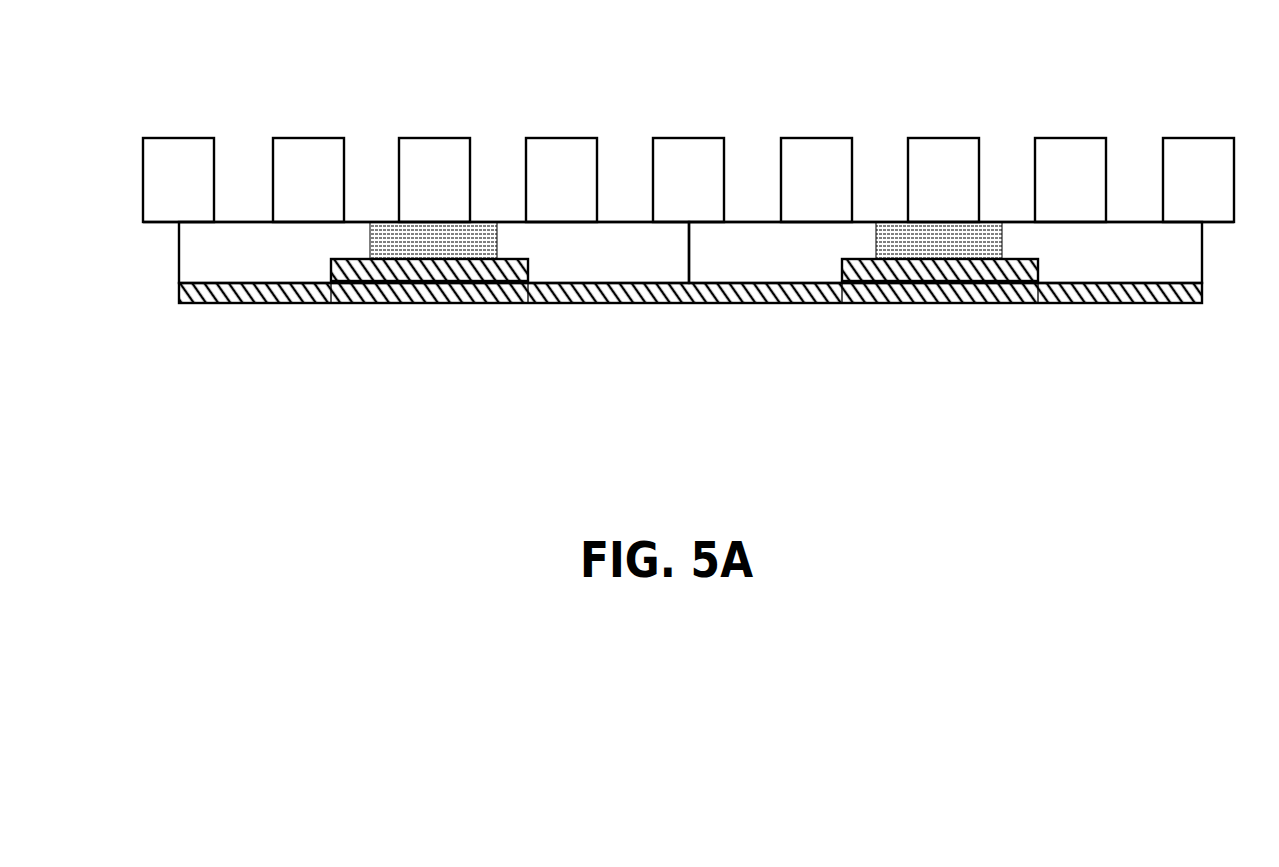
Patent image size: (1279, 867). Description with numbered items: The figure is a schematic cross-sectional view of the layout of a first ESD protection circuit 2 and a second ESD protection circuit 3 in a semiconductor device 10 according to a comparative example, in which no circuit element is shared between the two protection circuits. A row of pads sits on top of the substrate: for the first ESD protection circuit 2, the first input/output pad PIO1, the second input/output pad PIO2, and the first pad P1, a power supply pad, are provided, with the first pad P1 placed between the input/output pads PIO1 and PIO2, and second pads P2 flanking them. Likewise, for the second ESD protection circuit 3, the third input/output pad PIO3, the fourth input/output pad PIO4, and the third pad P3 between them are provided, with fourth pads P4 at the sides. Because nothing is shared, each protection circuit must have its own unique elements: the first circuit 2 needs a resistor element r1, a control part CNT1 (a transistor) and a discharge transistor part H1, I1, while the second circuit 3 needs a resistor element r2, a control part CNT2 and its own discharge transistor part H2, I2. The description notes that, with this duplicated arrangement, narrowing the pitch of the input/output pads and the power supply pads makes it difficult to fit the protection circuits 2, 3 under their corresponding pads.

The semiconductor device 10 is at (150, 105).
The first ESD protection circuit 2 is at (430, 326).
The second ESD protection circuit 3 is at (940, 326).
The first pad P1 is at (434, 138).
The second pad P2 is at (179, 138).
The third pad P3 is at (943, 138).
The fourth pad P4 is at (1198, 138).
The first input/output pad PIO1 is at (309, 138).
The second input/output pad PIO2 is at (562, 138).
The third input/output pad PIO3 is at (816, 138).
The fourth input/output pad PIO4 is at (1070, 138).
The control part CNT1 is at (331, 268).
The control part CNT2 is at (842, 268).
The resistor element r1 is at (367, 303).
The resistor element r2 is at (875, 303).
The discharge transistor part H1 is at (300, 326).
The discharge transistor part I1 is at (370, 238).
The discharge transistor part H2 is at (807, 330).
The discharge transistor part I2 is at (876, 238).